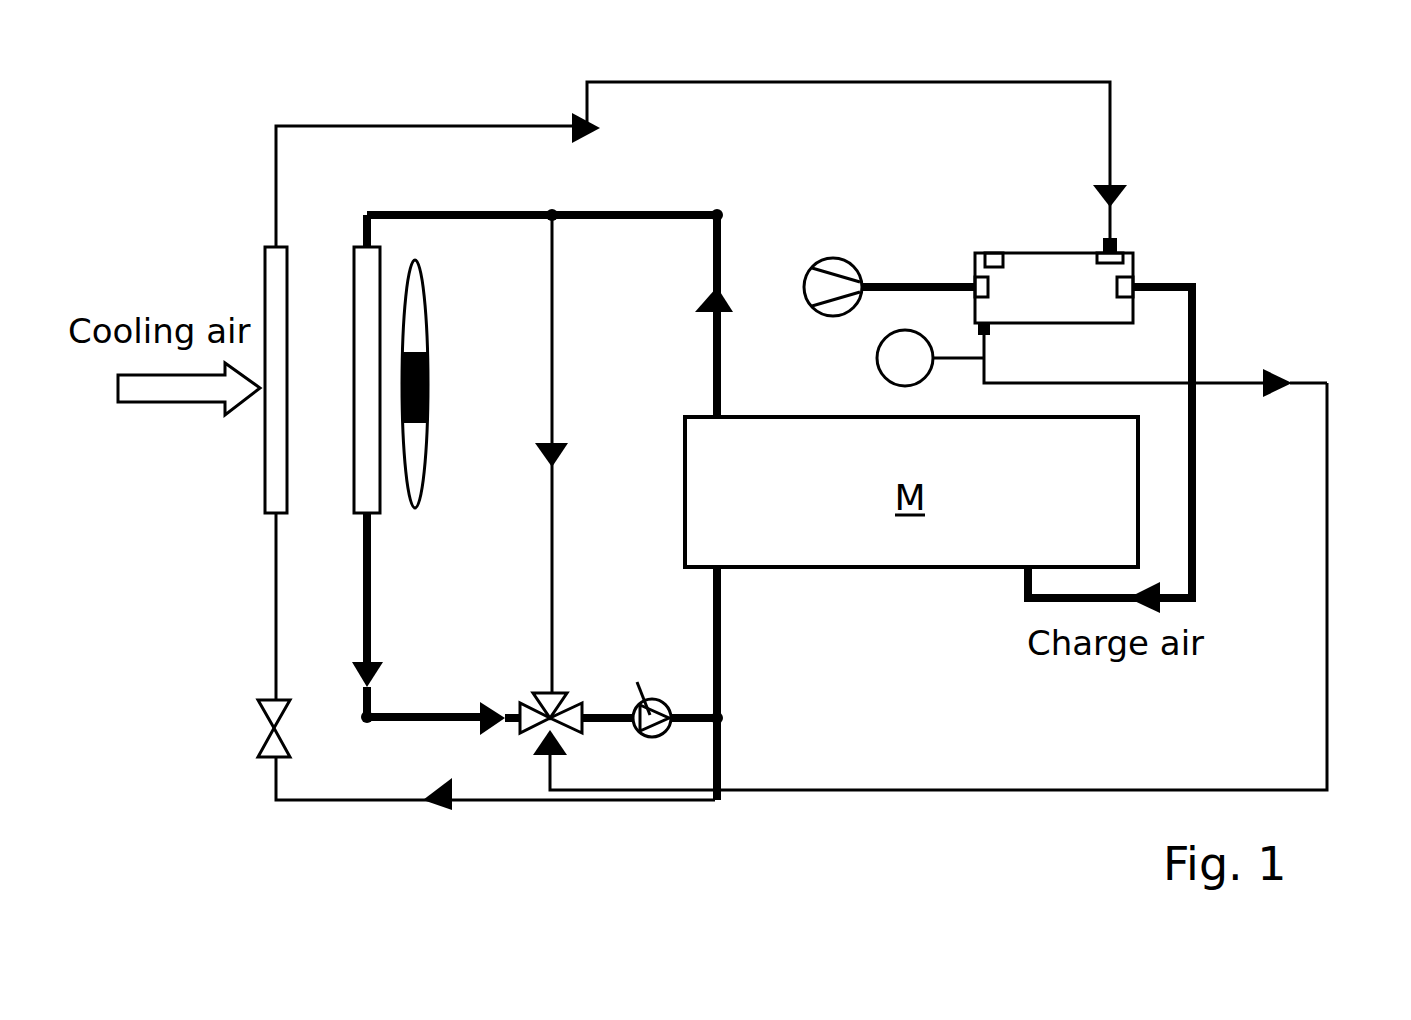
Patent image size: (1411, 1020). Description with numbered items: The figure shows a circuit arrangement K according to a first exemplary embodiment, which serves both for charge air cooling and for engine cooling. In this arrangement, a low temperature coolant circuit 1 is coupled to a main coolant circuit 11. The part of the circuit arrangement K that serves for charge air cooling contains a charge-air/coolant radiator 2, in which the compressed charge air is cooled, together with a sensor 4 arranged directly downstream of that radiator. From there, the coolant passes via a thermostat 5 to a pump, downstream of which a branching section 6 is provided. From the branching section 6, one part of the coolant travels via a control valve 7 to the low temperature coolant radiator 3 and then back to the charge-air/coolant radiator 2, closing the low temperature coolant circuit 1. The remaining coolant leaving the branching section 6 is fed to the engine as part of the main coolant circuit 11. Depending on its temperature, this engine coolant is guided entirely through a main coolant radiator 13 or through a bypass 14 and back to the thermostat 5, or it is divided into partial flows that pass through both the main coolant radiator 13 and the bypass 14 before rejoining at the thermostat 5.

The low temperature coolant circuit 1 is at (1200, 72).
The circuit arrangement K is at (1322, 150).
The charge-air/coolant radiator 2 is at (1040, 278).
The low temperature coolant radiator 3 is at (265, 435).
The sensor 4 is at (877, 358).
The thermostat 5 is at (548, 717).
The branching section 6 is at (762, 722).
The control valve 7 is at (268, 720).
The main coolant circuit 11 is at (772, 670).
The main coolant radiator 13 is at (362, 477).
The bypass 14 is at (550, 403).